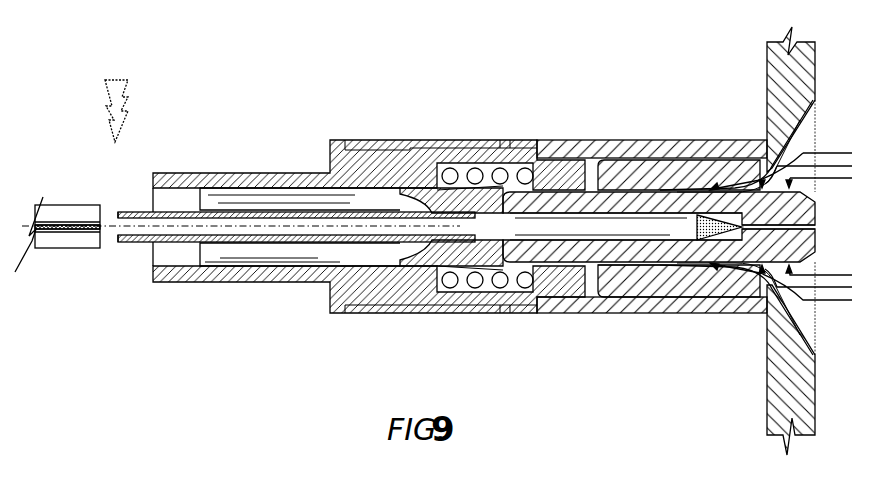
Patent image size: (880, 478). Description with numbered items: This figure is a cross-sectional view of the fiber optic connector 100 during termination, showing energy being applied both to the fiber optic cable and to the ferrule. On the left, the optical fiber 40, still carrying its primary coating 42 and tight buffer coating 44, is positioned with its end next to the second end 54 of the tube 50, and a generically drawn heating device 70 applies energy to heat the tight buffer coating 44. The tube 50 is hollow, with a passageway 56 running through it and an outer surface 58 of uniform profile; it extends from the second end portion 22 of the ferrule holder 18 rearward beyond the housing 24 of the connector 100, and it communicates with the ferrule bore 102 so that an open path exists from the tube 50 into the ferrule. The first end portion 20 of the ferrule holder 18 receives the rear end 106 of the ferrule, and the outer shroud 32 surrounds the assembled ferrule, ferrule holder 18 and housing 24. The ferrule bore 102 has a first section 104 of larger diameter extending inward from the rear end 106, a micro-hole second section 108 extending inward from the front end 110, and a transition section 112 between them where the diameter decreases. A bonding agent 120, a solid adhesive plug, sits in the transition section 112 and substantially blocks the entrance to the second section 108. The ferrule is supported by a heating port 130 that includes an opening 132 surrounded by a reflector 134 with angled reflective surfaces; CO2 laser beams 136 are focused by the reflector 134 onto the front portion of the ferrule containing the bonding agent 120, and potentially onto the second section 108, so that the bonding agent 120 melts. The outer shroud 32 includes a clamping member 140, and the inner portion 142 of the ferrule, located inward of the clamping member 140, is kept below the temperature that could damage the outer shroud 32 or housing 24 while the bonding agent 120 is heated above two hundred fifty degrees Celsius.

The fiber optic connector 100 is at (250, 86).
The heating device 70 is at (121, 80).
The optical fiber 40 is at (62, 232).
The primary coating 42 is at (58, 222).
The tight buffer coating 44 is at (85, 205).
The tube 50 is at (228, 209).
The second end 54 is at (118, 211).
The passageway 56 is at (118, 243).
The outer surface 58 is at (273, 212).
The housing 24 is at (304, 173).
The second end portion 22 is at (420, 202).
The ferrule holder 18 is at (487, 177).
The first section 104 is at (567, 222).
The first end portion 20 is at (597, 160).
The outer shroud 32 is at (678, 140).
The transition section 112 is at (725, 213).
The heating port 130 is at (816, 53).
The opening 132 is at (812, 124).
The CO2 laser beams 136 is at (815, 153).
The front end 110 is at (803, 212).
The second section 108 is at (800, 232).
The reflector 134 is at (802, 335).
The rear end 106 is at (491, 250).
The inner portion 142 is at (580, 319).
The clamping member 140 is at (622, 267).
The ferrule bore 102 is at (662, 243).
The bonding agent 120 is at (696, 216).